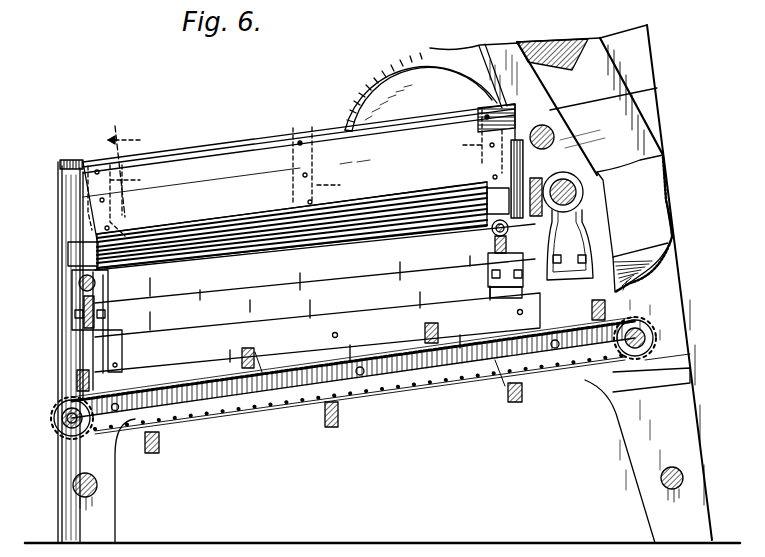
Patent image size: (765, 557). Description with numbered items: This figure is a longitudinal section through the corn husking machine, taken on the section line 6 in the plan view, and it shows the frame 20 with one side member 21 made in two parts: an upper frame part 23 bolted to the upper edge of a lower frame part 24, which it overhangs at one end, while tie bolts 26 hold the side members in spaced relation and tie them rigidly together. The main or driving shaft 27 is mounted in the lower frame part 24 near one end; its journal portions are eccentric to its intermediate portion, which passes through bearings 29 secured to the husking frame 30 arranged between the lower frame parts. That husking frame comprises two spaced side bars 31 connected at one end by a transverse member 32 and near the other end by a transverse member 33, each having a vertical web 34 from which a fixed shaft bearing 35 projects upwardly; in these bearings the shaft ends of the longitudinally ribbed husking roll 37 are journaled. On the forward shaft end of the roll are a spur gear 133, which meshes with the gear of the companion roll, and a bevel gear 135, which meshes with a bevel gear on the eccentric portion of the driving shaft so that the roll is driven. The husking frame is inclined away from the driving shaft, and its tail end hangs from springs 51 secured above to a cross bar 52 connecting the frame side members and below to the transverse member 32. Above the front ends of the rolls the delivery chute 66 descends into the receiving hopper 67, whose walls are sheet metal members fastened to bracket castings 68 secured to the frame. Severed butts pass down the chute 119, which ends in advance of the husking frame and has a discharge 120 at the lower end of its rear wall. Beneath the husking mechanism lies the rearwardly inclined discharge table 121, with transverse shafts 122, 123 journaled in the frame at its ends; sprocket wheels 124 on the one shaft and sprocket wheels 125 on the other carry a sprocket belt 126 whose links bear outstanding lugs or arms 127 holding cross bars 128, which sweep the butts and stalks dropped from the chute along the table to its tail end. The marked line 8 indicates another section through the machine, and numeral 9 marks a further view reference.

The section line 6 is at (116, 347).
The section line 8 is at (125, 161).
The roller 9 is at (176, 245).
The frame 20 is at (673, 287).
The side member 21 is at (653, 92).
The upper frame part 23 is at (640, 50).
The lower frame part 24 is at (673, 320).
The tie bolt 26 is at (98, 484).
The main or driving shaft 27 is at (563, 185).
The bearing 29 is at (655, 202).
The husking frame 30 is at (317, 343).
The side bar 31 is at (292, 287).
The transverse member 32 is at (113, 317).
The transverse member 33 is at (505, 289).
The vertical web 34 is at (493, 262).
The fixed shaft bearing 35 is at (70, 252).
The husking roll 37 is at (420, 183).
The spring 51 is at (66, 213).
The cross bar 52 is at (61, 168).
The delivery chute 66 is at (432, 62).
The receiving hopper 67 is at (353, 153).
The casting 68 is at (295, 173).
The chute 119 is at (622, 133).
The discharge 120 is at (673, 238).
The discharge table 121 is at (428, 426).
The transverse shaft 122 is at (607, 408).
The transverse shaft 123 is at (45, 467).
The sprocket wheel 124 is at (655, 350).
The sprocket wheel 125 is at (53, 421).
The sprocket belt 126 is at (288, 444).
The lug or arm 127 is at (258, 363).
The cross bar 128 is at (242, 353).
The spur gear 133 is at (510, 165).
The bevel gear 135 is at (540, 170).